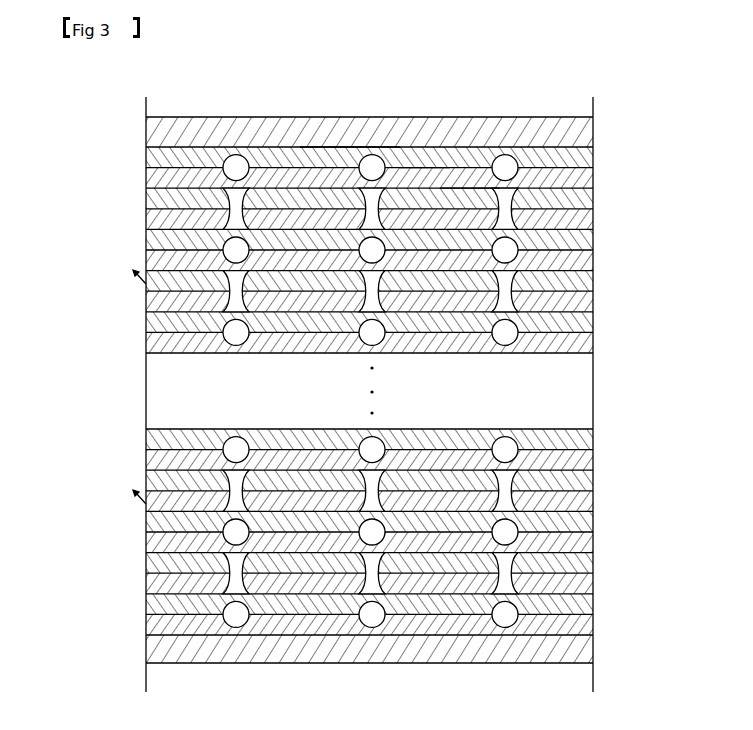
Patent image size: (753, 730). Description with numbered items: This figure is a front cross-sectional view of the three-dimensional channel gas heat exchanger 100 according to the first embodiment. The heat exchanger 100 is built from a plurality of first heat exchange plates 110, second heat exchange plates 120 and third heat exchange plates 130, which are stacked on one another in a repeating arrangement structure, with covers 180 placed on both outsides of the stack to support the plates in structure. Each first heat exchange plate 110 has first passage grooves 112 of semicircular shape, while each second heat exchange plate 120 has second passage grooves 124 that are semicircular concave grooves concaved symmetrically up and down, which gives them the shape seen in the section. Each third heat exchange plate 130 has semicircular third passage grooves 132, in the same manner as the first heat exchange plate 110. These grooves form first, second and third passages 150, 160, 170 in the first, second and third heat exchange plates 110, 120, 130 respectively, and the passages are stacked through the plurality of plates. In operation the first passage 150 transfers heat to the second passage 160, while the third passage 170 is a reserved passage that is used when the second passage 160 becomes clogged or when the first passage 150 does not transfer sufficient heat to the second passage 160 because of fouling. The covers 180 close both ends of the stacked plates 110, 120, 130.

The 3-D channel gas heat exchanger 100 is at (270, 92).
The first heat exchange plate 110 is at (595, 234).
The first passage groove 112 is at (427, 160).
The second heat exchange plate 120 is at (595, 194).
The second passage groove 124 is at (340, 150).
The third heat exchange plate 130 is at (595, 153).
The third passage groove 132 is at (377, 156).
The first passage 150 is at (520, 244).
The second passage 160 is at (476, 188).
The third passage 170 is at (500, 162).
The cover 180 is at (595, 128).